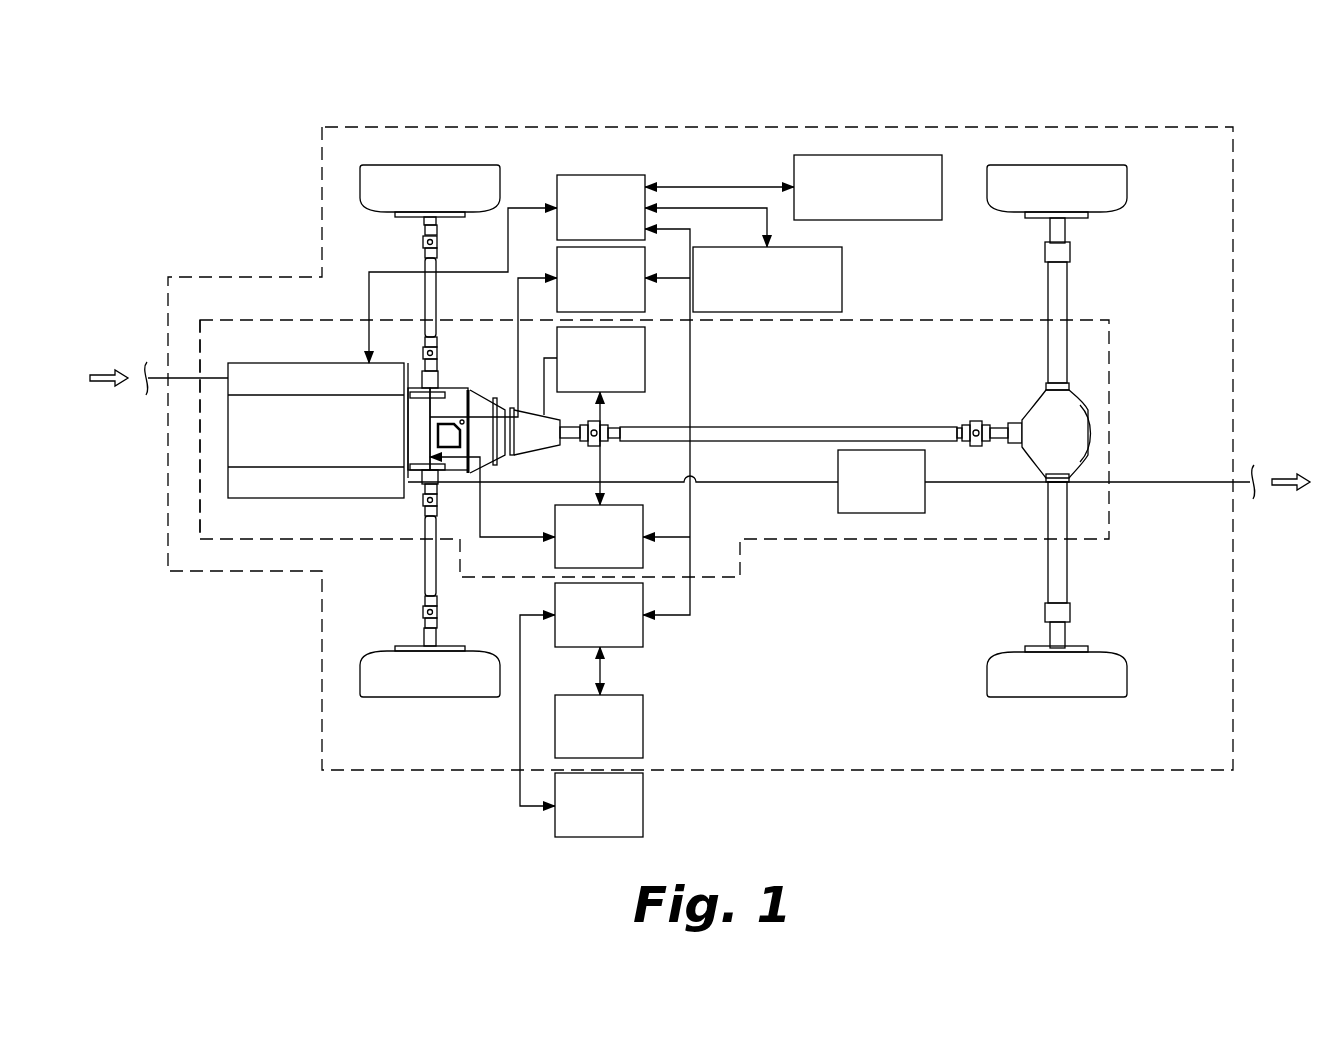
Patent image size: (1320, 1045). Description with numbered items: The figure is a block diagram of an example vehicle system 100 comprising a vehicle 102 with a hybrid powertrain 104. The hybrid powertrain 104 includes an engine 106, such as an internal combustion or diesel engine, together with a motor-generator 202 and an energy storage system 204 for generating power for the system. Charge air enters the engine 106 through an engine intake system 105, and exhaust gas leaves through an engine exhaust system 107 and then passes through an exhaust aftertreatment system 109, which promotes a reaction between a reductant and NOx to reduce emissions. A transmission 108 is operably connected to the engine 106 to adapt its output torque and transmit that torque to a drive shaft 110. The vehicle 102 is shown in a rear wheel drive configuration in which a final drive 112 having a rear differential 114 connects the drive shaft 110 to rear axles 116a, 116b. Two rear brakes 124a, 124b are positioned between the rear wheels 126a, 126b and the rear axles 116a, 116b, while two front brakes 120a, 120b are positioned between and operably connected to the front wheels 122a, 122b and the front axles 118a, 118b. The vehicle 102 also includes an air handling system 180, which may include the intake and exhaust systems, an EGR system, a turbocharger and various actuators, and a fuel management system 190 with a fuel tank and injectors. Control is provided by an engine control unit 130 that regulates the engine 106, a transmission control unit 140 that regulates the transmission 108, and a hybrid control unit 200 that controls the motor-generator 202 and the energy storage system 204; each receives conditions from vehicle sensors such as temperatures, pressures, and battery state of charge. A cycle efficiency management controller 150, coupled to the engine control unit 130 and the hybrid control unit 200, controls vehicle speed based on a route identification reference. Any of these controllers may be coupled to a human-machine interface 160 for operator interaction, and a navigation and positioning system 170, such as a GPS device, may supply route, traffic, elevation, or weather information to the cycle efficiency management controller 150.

The vehicle system 100 is at (1050, 78).
The vehicle 102 is at (1136, 126).
The hybrid powertrain 104 is at (870, 318).
The engine intake system 105 is at (216, 357).
The engine 106 is at (335, 441).
The engine exhaust system 107 is at (418, 490).
The transmission 108 is at (506, 446).
The exhaust aftertreatment system 109 is at (863, 507).
The drive shaft 110 is at (728, 427).
The final drive 112 is at (1097, 428).
The rear differential 114 is at (1072, 444).
The rear axle 116a is at (1068, 284).
The rear axle 116b is at (1068, 584).
The front axle 118a is at (425, 280).
The front axle 118b is at (425, 556).
The front brake 120a is at (419, 218).
The front brake 120b is at (419, 652).
The front wheel 122a is at (360, 186).
The front wheel 122b is at (360, 670).
The rear brake 124a is at (1031, 218).
The rear brake 124b is at (1072, 648).
The rear wheel 126a is at (1128, 193).
The rear wheel 126b is at (1128, 690).
The engine control unit 130 is at (583, 233).
The transmission control unit 140 is at (583, 305).
The cycle efficiency management controller 150 is at (581, 640).
The human-machine interface 160 is at (581, 752).
The navigation and positioning system 170 is at (581, 830).
The air handling system 180 is at (749, 305).
The fuel management system 190 is at (850, 213).
The hybrid control unit 200 is at (581, 562).
The motor-generator 202 is at (440, 396).
The energy storage system 204 is at (583, 385).